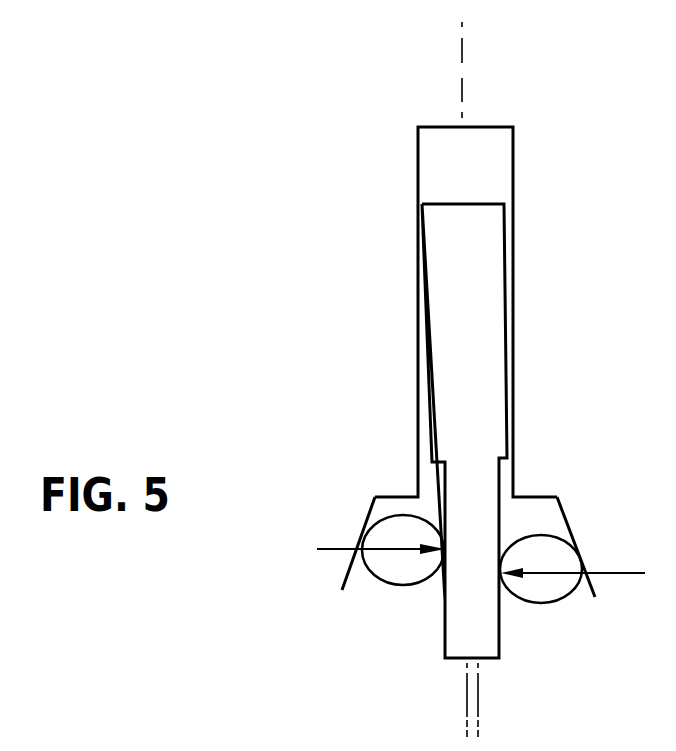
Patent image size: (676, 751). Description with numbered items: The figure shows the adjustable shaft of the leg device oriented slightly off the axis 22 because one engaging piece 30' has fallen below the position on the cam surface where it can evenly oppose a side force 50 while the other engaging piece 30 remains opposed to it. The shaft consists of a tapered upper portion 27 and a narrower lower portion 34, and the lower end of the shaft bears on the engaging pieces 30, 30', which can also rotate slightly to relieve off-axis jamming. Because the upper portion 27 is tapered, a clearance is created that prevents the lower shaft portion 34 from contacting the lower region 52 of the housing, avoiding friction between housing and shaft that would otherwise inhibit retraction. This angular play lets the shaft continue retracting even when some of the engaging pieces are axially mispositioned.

The axis 22 is at (462, 62).
The upper portion 27 is at (477, 312).
The lower region 52 is at (517, 495).
The lower portion 34 is at (502, 523).
The engaging piece 30 is at (357, 563).
The engaging piece 30' is at (580, 552).
The side force 50 is at (445, 623).